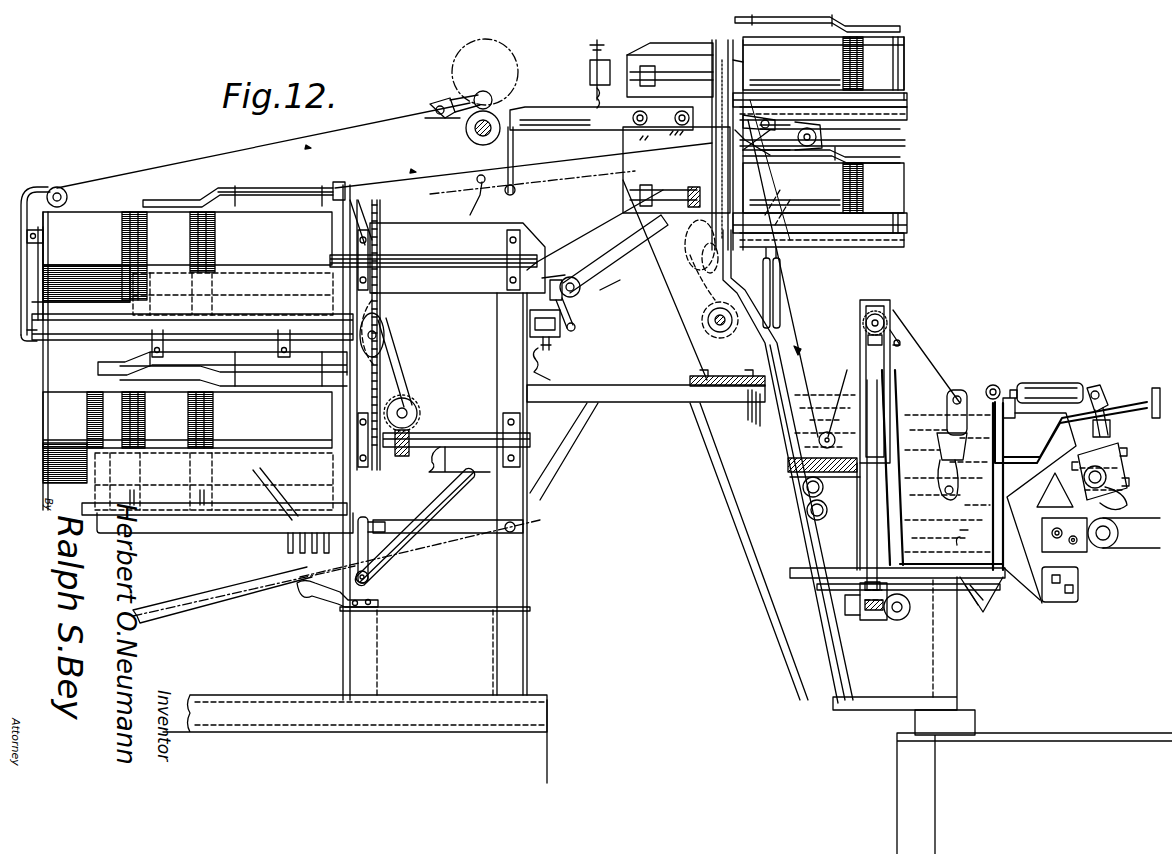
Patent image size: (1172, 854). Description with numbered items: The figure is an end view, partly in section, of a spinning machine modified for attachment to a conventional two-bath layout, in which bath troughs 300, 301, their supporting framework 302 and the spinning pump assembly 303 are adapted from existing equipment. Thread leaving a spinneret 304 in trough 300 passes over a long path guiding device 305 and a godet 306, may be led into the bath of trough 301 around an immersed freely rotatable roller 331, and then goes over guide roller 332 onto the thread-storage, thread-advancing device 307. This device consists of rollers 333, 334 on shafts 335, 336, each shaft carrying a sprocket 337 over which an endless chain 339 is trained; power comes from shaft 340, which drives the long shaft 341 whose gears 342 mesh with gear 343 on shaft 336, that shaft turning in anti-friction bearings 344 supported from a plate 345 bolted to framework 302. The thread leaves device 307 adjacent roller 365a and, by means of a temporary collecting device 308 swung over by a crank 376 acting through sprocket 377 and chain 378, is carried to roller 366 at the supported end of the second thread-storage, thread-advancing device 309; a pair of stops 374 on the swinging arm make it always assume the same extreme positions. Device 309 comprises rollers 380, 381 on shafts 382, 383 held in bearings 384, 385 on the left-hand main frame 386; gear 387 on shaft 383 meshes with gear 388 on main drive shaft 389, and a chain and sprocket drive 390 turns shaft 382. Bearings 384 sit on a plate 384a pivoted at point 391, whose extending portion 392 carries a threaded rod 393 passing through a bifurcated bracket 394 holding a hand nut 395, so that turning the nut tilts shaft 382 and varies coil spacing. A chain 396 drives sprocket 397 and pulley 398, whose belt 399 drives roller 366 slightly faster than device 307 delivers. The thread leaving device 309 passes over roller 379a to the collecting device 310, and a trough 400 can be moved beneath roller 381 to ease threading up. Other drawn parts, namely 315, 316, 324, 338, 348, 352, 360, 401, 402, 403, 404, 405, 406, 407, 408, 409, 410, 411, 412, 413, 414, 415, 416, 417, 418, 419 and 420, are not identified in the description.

The bath trough 300 is at (1002, 580).
The bath trough 301 is at (780, 420).
The supporting framework 302 is at (790, 564).
The spinning pump assembly 303 is at (1125, 468).
The spinneret 304 is at (975, 600).
The long path guiding device 305 is at (957, 388).
The godet 306 is at (893, 310).
The thread-storage, thread-advancing device 307 is at (908, 75).
The temporary collecting device 308 is at (905, 142).
The thread-storage, thread-advancing device 309 is at (88, 212).
The collecting device 310 is at (500, 90).
The inclined rod 315 is at (668, 312).
The arm with cylinder 316 is at (1005, 437).
The channel guide 324 is at (897, 400).
The immersed freely rotatable roller 331 is at (830, 475).
The guide roller 332 is at (765, 115).
The roller 333 is at (908, 93).
The roller 334 is at (907, 193).
The shaft 335 is at (680, 72).
The shaft 336 is at (625, 263).
The sprocket 337 is at (720, 55).
The cam 338 is at (703, 258).
The endless chain 339 is at (700, 140).
The shaft 340 is at (718, 332).
The shaft 341 is at (630, 290).
The gear 342 is at (692, 277).
The gear 343 is at (693, 186).
The anti-friction bearings 344 is at (620, 235).
The plate 345 is at (672, 330).
The box housing 348 is at (640, 55).
The adjusting screw 352 is at (612, 60).
The arm 360 is at (560, 110).
The roller 365a is at (880, 128).
The roller 366 is at (340, 183).
The stops 374 is at (675, 190).
The crank 376 is at (578, 310).
The sprocket 377 is at (582, 290).
The chain 378 is at (583, 260).
The roller 379a is at (56, 185).
The roller 380 is at (115, 212).
The roller 381 is at (75, 390).
The shaft 382 is at (450, 265).
The shaft 383 is at (445, 448).
The bearings 384 is at (390, 233).
The plate 384a is at (455, 215).
The bearings 385 is at (495, 415).
The main frame 386 is at (527, 568).
The gear 387 is at (412, 430).
The gear 388 is at (413, 403).
The main drive shaft 389 is at (405, 380).
The chain and sprocket drive 390 is at (380, 325).
The pivot point 391 is at (385, 248).
The extending portion 392 is at (560, 250).
The threaded rod 393 is at (560, 352).
The bifurcated bracket 394 is at (548, 370).
The hand nut 395 is at (560, 330).
The chain 396 is at (402, 357).
The sprocket 397 is at (383, 308).
The pulley 398 is at (385, 335).
The belt 399 is at (372, 220).
The trough 400 is at (117, 513).
The plate 401 is at (238, 528).
The bar 402 is at (525, 527).
The bracket 403 is at (388, 520).
The pin 404 is at (362, 517).
The lever 405 is at (418, 566).
The pivot 406 is at (372, 580).
The lever 407 is at (455, 483).
The handle 408 is at (308, 600).
The panel 409 is at (823, 135).
The grid panel 410 is at (868, 125).
The plate edge 411 is at (900, 55).
The rod 412 is at (890, 33).
The housing 413 is at (800, 45).
The rod 414 is at (900, 160).
The pin 415 is at (850, 155).
The strip 416 is at (908, 110).
The strip 417 is at (906, 242).
The roller 418 is at (803, 490).
The roller 419 is at (807, 512).
The fork tines 420 is at (288, 548).